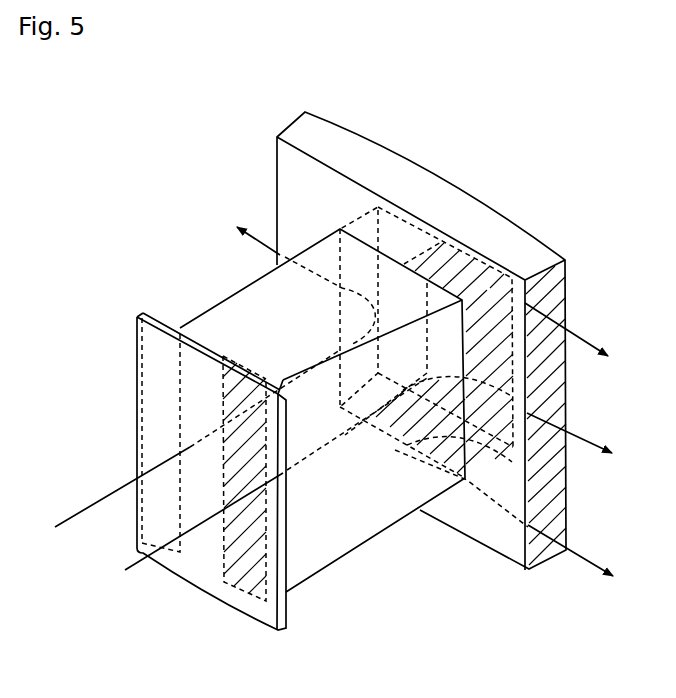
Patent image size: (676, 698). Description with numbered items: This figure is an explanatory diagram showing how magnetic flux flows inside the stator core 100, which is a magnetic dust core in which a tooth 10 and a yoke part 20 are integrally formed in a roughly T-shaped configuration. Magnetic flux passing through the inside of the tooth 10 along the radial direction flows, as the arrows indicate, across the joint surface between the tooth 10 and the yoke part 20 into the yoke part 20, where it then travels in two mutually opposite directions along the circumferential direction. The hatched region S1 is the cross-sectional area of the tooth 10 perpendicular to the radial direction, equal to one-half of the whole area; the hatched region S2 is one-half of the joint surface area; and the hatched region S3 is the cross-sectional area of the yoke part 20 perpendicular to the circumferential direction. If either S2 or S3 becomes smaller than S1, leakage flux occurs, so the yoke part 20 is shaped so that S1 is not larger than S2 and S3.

The stator core 100 is at (180, 115).
The tooth 10 is at (365, 518).
The yoke part 20 is at (443, 358).
The cross-sectional area of the tooth S1 is at (243, 573).
The one-half area of the joint surface S2 is at (490, 440).
The cross-sectional area of the yoke part S3 is at (560, 503).